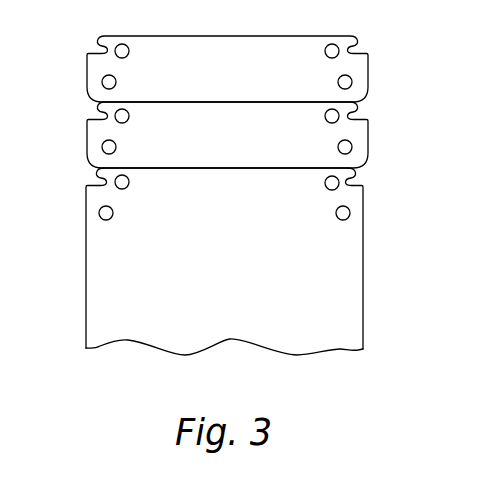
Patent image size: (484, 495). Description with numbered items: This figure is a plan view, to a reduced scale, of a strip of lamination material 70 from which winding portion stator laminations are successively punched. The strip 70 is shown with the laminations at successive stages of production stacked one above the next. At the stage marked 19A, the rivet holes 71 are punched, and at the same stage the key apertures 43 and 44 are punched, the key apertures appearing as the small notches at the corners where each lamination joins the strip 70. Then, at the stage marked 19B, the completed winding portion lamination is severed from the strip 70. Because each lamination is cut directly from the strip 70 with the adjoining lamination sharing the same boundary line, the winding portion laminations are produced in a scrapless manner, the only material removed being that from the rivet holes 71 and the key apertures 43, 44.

The completed winding portion lamination 19B is at (87, 79).
The winding portion lamination 19A is at (87, 148).
The key aperture 43 is at (99, 177).
The key aperture 44 is at (347, 183).
The strip of lamination material 70 is at (86, 225).
The rivet holes 71 is at (336, 217).